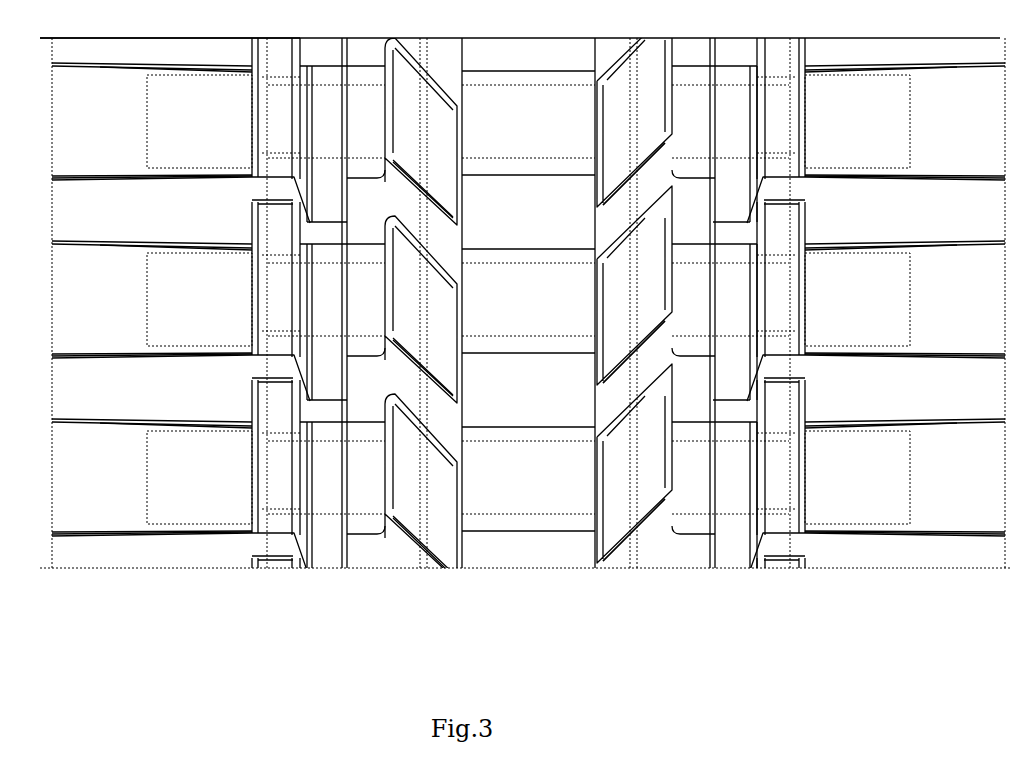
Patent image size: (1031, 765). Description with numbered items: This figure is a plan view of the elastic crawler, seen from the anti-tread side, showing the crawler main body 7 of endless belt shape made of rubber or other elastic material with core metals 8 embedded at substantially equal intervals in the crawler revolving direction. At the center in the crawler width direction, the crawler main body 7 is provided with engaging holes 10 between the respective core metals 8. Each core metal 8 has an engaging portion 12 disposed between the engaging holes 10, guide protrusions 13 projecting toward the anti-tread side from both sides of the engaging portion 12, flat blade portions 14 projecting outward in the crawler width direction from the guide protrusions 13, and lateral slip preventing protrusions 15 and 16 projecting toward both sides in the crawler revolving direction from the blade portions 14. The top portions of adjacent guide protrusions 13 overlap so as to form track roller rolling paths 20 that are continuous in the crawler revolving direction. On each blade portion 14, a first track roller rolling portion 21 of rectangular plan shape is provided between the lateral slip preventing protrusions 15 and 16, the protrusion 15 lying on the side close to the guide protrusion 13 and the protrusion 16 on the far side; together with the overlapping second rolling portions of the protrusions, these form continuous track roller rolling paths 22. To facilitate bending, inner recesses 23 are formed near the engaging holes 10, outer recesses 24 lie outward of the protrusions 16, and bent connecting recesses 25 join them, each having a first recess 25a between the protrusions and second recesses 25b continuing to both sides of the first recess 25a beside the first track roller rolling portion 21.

The crawler main body 7 is at (150, 30).
The core metals 8 is at (533, 85).
The engaging holes 10 is at (518, 178).
The engaging portion 12 is at (516, 85).
The guide protrusions 13 is at (460, 150).
The blade portions 14 is at (147, 129).
The lateral slip preventing protrusion 15 is at (348, 202).
The lateral slip preventing protrusion 16 is at (268, 53).
The track roller rolling paths 20 is at (440, 288).
The first track roller rolling portion 21 is at (258, 98).
The track roller rolling paths 22 is at (295, 297).
The inner recesses 23 is at (448, 212).
The outer recesses 24 is at (135, 205).
The connecting recesses 25 is at (290, 186).
The first recess 25a is at (275, 208).
The second recesses 25b is at (270, 191).